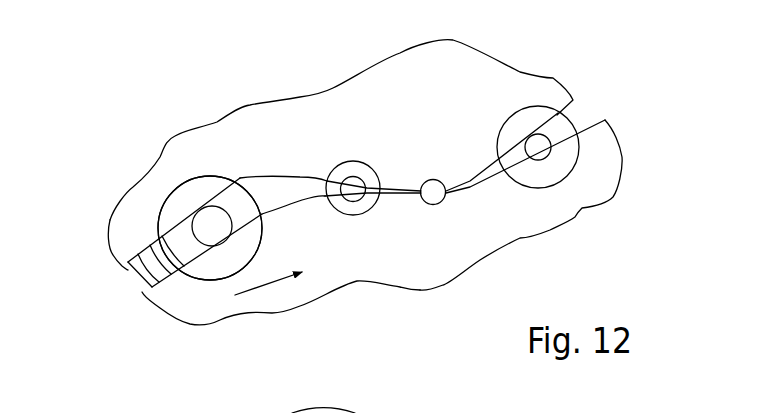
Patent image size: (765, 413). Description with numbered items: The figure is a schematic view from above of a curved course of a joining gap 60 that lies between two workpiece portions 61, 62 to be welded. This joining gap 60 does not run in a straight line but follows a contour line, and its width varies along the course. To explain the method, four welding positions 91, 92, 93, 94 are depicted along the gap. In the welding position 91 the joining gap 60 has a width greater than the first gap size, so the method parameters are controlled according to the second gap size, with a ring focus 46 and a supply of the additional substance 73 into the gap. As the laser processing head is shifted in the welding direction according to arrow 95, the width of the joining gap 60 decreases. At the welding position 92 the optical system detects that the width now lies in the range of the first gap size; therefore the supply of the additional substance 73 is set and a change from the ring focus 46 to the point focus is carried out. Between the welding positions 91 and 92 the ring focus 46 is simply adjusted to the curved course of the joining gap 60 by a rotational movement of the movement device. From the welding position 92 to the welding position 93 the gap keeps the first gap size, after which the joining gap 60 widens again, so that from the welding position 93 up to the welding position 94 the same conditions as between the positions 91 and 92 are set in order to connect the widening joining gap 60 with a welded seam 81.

The ring focus 46 is at (177, 212).
The joining gap 60 is at (592, 112).
The workpiece portion 61 is at (385, 92).
The workpiece portion 62 is at (443, 267).
The additional substance 73 is at (243, 205).
The welded seam 81 is at (137, 278).
The welding position 91 is at (173, 180).
The welding position 92 is at (333, 152).
The welding position 93 is at (425, 157).
The welding position 94 is at (510, 104).
The arrow 95 is at (270, 283).